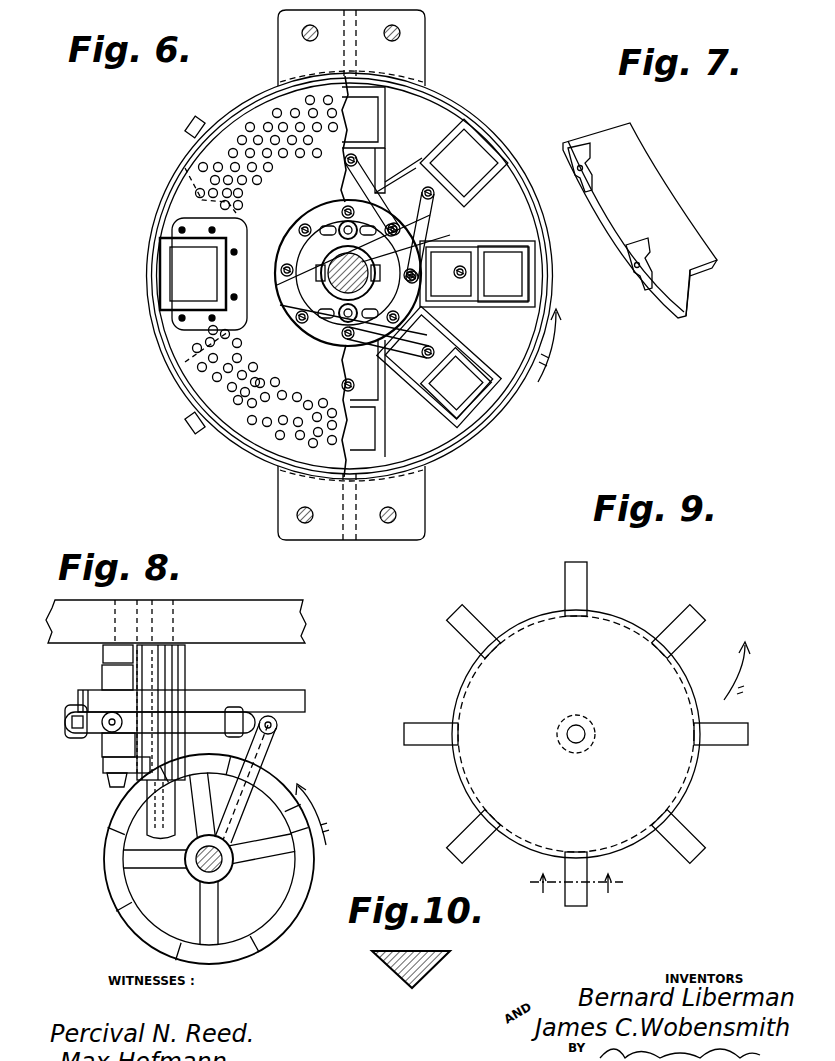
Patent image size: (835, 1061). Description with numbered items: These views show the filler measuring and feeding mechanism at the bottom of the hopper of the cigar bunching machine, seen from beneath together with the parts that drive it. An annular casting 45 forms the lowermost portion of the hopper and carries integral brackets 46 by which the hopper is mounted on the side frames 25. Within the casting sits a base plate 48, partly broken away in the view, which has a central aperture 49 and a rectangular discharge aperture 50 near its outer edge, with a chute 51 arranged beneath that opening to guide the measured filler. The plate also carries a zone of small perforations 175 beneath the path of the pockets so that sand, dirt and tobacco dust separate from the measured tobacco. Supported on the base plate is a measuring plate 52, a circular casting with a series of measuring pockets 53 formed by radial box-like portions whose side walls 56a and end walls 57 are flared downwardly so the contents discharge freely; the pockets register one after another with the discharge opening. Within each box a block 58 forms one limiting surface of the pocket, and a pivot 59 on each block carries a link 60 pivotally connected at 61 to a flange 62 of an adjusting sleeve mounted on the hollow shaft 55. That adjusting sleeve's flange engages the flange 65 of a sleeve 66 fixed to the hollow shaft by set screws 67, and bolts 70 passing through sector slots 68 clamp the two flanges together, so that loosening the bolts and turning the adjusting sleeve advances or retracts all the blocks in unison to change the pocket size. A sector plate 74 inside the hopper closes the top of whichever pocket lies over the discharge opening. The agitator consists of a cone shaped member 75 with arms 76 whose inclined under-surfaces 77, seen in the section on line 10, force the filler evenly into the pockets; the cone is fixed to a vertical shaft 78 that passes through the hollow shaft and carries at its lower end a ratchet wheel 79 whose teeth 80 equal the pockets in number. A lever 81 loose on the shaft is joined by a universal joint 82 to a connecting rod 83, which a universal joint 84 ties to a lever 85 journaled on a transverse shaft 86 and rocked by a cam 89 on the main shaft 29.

In FIG. 9, the section line 10— 10 is at (578, 886).
In FIG. 8, the side frames 25 is at (257, 610).
In FIG. 8, the main shaft 29 is at (177, 598).
In FIG. 6, the annular casting 45 is at (456, 449).
In FIG. 6, the brackets 46 is at (408, 58).
In FIG. 6, the base plate 48 is at (332, 205).
In FIG. 6, the central aperture 49 is at (326, 208).
In FIG. 6, the rectangular discharge aperture 50 is at (185, 264).
In FIG. 6, the chute 51 is at (195, 232).
In FIG. 6, the measuring plate 52 is at (507, 333).
In FIG. 6, the measuring pockets 53 is at (474, 332).
In FIG. 6, the hollow shaft or sleeve 55 is at (348, 273).
In FIG. 6, the side walls 56a is at (508, 242).
In FIG. 6, the end walls 57 is at (478, 414).
In FIG. 6, the block 58 is at (367, 143).
In FIG. 6, the pivot 59 is at (420, 313).
In FIG. 6, the link 60 is at (437, 290).
In FIG. 6, the pivotal connection 61 is at (380, 393).
In FIG. 6, the flange 62 is at (340, 350).
In FIG. 6, the flange 65 is at (292, 261).
In FIG. 6, the sleeve 66 is at (318, 298).
In FIG. 6, the set screws 67 is at (330, 292).
In FIG. 6, the sector slots 68 is at (332, 236).
In FIG. 6, the bolts 70 is at (342, 207).
In FIG. 7, the sector plate 74 is at (648, 204).
In FIG. 9, the cone shaped member 75 is at (601, 734).
In FIG. 9, the arms 76 is at (470, 630).
In FIG. 10, the arms 76 is at (430, 951).
In FIG. 10, the inclined under-surfaces 77 is at (423, 978).
In FIG. 6, the vertical shaft 78 is at (358, 268).
In FIG. 8, the vertical shaft 78 is at (214, 866).
In FIG. 9, the vertical shaft 78 is at (580, 716).
In FIG. 8, the ratchet wheel 79 is at (288, 855).
In FIG. 8, the teeth 80 is at (253, 945).
In FIG. 8, the lever 81 is at (258, 760).
In FIG. 8, the universal joint 82 is at (278, 728).
In FIG. 8, the connecting rod 83 is at (207, 723).
In FIG. 8, the universal joint 84 is at (97, 727).
In FIG. 8, the lever 85 is at (66, 722).
In FIG. 8, the transversely extending shaft 86 is at (122, 784).
In FIG. 8, the cam 89 is at (275, 682).
In FIG. 6, the perforations 175 is at (307, 403).